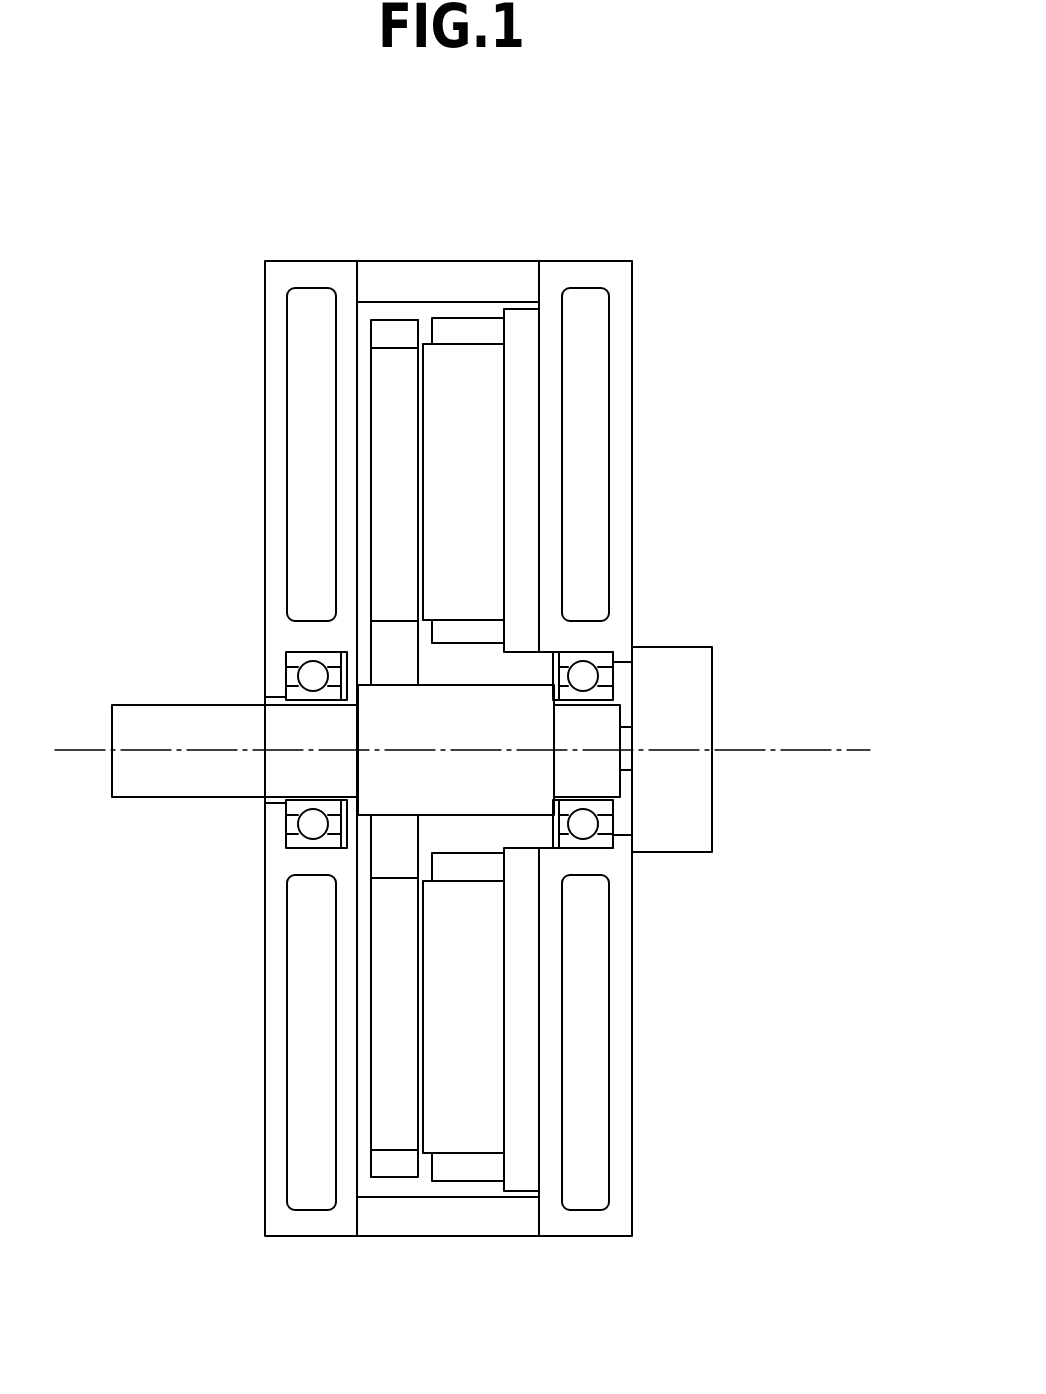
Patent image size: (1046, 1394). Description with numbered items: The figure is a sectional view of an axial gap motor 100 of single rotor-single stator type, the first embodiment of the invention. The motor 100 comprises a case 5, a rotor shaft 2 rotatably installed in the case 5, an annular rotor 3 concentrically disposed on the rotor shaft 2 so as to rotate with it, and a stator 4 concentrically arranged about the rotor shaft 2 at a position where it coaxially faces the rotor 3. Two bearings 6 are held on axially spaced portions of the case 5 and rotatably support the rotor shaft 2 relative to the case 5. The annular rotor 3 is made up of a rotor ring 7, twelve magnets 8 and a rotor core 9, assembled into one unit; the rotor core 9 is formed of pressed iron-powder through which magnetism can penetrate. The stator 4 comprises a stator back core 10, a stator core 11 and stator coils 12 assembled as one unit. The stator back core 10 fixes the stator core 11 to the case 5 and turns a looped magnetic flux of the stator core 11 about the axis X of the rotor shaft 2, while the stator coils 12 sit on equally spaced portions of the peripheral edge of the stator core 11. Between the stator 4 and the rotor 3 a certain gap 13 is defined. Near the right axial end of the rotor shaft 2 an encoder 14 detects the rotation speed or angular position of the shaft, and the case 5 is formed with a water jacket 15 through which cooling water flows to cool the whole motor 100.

The axial gap motor 100 is at (713, 173).
The rotor shaft 2 is at (474, 792).
The annular rotor 3 is at (563, 748).
The stator 4 is at (596, 744).
The case 5 is at (473, 1215).
The bearings 6 is at (290, 660).
The rotor ring 7 is at (400, 1163).
The magnets 8 is at (395, 997).
The rotor core 9 is at (390, 852).
The stator back core 10 is at (527, 447).
The stator core 11 is at (478, 387).
The stator coils 12 is at (478, 330).
The gap 13 is at (422, 313).
The encoder 14 is at (682, 677).
The water jacket 15 is at (305, 967).
The axis X is at (788, 752).